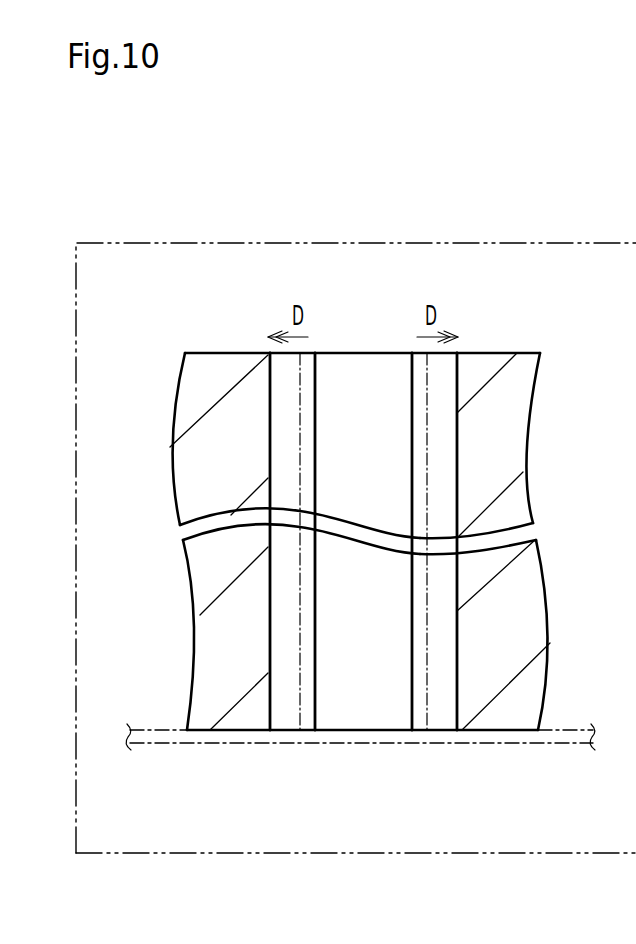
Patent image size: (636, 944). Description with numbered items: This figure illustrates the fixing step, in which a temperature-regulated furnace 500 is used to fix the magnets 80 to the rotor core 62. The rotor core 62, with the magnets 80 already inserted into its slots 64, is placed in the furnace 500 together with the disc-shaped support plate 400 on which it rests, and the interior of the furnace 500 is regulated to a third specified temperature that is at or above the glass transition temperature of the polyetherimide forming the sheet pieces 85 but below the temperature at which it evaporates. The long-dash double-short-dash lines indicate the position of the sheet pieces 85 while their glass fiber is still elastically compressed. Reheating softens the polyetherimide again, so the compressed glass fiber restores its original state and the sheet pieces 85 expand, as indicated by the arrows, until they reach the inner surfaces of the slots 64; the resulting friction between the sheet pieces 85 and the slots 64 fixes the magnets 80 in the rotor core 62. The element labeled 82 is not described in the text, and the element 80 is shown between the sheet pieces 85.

The furnace 500 is at (481, 243).
The support plate 400 is at (510, 745).
The slot 64 is at (272, 402).
The rotor core 62 is at (487, 353).
The magnet 80 is at (363, 600).
The adhesive layer 82 is at (427, 805).
The sheet piece 85 is at (306, 732).